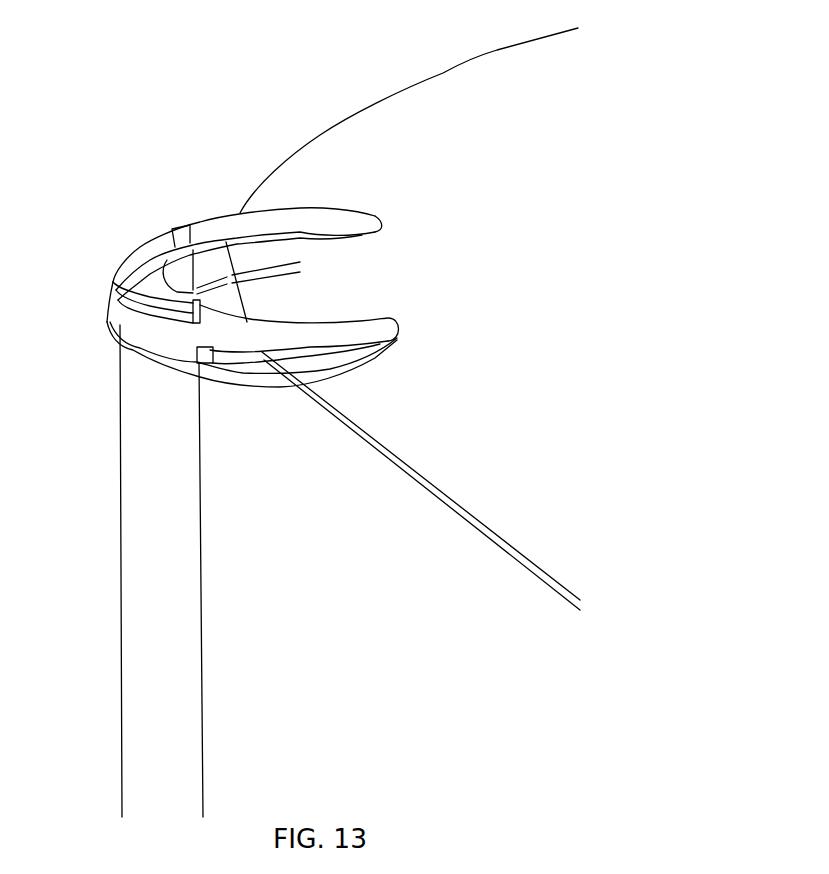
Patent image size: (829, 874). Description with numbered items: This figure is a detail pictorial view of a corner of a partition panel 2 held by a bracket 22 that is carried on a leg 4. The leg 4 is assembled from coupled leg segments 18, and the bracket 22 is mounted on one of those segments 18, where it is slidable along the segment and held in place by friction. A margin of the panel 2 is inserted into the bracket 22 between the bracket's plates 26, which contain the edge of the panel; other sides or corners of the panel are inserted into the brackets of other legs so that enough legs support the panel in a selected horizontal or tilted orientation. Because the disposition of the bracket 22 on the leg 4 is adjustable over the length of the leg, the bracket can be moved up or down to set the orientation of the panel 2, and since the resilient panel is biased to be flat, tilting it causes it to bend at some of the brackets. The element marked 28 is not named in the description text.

The partition 2 is at (507, 273).
The leg 4 is at (120, 567).
The leg segment 18 is at (140, 242).
The bracket 22 is at (223, 213).
The plates 26 is at (327, 218).
The lower tab 28 is at (112, 326).